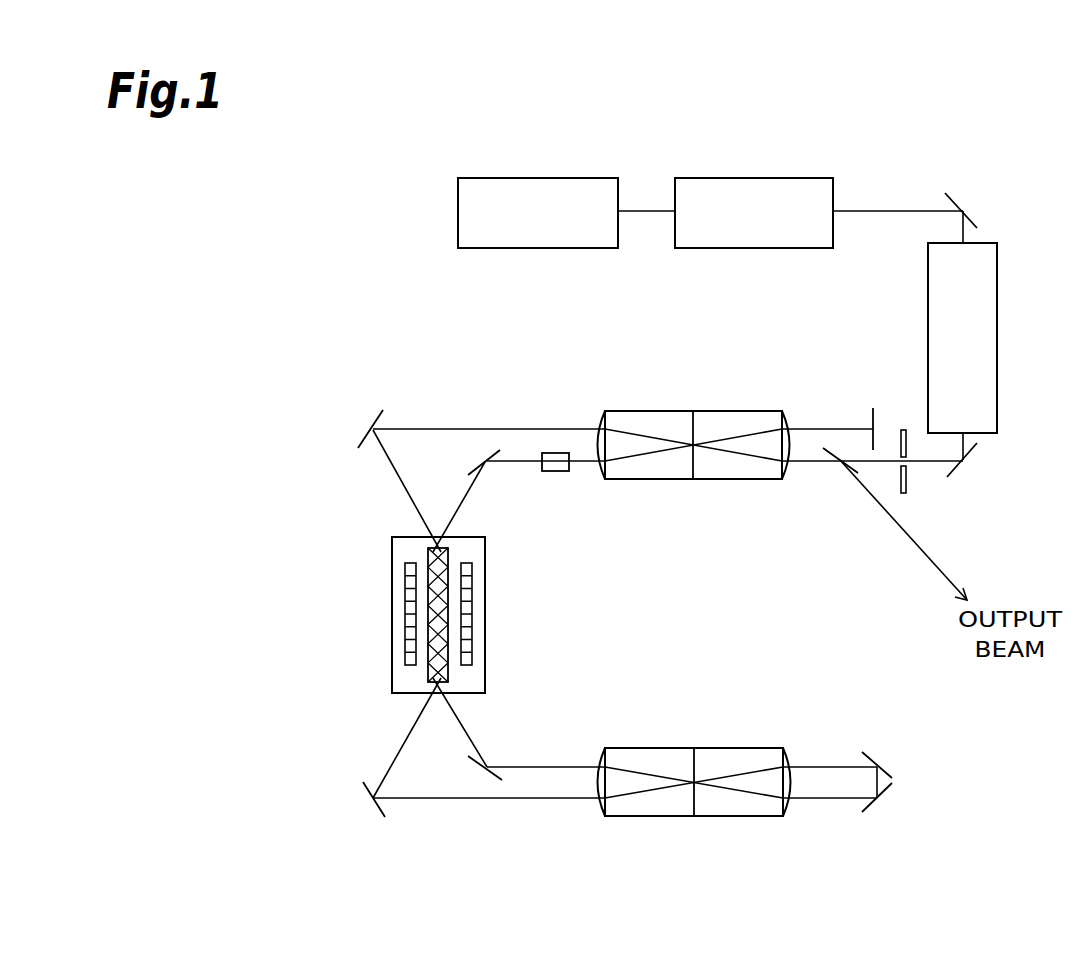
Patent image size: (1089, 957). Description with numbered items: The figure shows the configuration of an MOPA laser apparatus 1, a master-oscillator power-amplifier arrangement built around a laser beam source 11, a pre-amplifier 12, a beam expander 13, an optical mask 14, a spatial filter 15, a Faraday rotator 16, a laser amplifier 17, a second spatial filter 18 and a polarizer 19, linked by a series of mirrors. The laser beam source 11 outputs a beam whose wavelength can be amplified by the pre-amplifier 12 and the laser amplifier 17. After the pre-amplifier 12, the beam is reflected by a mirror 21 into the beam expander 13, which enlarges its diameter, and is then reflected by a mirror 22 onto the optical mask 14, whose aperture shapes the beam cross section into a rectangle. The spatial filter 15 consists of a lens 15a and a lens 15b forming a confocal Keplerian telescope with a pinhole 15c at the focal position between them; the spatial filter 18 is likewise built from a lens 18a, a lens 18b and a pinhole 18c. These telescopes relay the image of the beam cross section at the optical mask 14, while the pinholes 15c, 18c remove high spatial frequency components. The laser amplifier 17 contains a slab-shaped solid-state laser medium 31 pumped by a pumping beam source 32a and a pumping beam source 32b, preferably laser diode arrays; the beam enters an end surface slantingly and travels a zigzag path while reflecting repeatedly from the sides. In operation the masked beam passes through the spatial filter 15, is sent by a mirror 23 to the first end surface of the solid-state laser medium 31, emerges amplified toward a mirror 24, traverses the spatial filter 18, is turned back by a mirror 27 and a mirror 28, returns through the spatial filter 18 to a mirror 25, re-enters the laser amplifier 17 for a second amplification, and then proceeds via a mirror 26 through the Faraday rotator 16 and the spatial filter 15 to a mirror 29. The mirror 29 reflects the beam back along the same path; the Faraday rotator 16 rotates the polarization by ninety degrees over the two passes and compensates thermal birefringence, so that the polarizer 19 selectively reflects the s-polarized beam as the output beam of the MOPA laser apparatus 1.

The MOPA laser apparatus 1 is at (390, 270).
The laser beam source 11 is at (568, 178).
The pre-amplifier 12 is at (785, 178).
The beam expander 13 is at (997, 294).
The optical mask 14 is at (908, 478).
The spatial filter 15 is at (693, 453).
The lens 15a is at (782, 482).
The lens 15b is at (603, 482).
The pinhole 15c is at (691, 454).
The Faraday rotator 16 is at (558, 472).
The laser amplifier 17 is at (392, 567).
The spatial filter 18 is at (690, 779).
The lens 18a is at (598, 746).
The lens 18b is at (782, 746).
The pinhole 18c is at (701, 777).
The polarizer 19 is at (852, 471).
The mirror 21 is at (972, 213).
The mirror 22 is at (952, 474).
The mirror 23 is at (372, 420).
The mirror 24 is at (486, 768).
The mirror 25 is at (374, 806).
The mirror 26 is at (480, 465).
The mirror 27 is at (877, 807).
The mirror 28 is at (877, 760).
The mirror 29 is at (872, 421).
The solid-state laser medium 31 is at (426, 672).
The pumping beam source 32a is at (405, 620).
The pumping beam source 32b is at (472, 620).